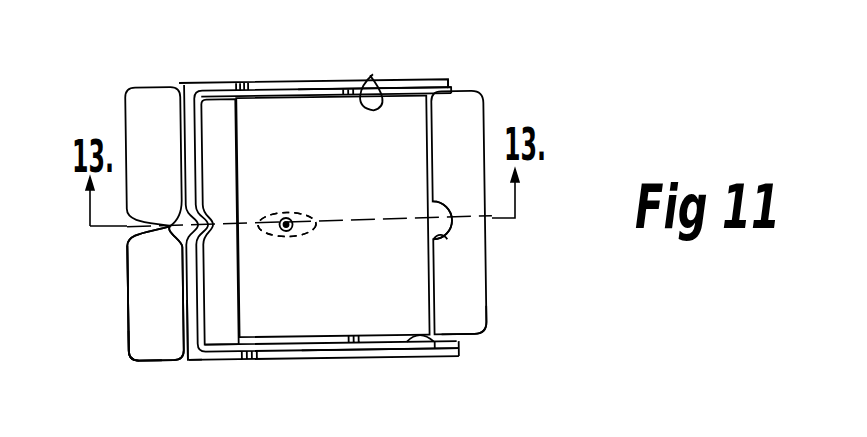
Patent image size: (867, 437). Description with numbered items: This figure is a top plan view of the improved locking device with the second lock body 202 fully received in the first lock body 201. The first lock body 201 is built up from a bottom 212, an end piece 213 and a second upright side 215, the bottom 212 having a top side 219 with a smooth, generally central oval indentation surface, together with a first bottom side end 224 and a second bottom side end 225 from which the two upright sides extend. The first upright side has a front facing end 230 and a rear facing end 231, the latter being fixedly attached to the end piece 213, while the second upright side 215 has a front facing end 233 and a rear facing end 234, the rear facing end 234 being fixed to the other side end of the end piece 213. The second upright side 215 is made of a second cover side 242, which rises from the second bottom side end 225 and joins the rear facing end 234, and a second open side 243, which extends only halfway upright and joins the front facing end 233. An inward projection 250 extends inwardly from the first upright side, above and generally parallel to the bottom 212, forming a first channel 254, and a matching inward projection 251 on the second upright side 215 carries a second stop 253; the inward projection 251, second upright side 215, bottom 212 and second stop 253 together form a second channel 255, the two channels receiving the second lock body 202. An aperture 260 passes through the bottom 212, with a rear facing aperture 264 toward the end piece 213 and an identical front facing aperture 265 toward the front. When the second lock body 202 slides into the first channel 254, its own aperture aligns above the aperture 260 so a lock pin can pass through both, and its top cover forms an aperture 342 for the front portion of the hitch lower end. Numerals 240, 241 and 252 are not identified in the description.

The first lock body 201 is at (130, 258).
The second lock body 202 is at (486, 290).
The bottom 212 is at (242, 325).
The end piece 213 is at (128, 286).
The second upright side 215 is at (257, 83).
The top side 219 is at (257, 393).
The first bottom side end 224 is at (460, 358).
The second bottom side end 225 is at (452, 80).
The front facing end 230 is at (460, 352).
The rear facing end 231 is at (132, 354).
The front facing end 233 is at (453, 88).
The rear facing end 234 is at (126, 90).
The lower frame member 240 is at (173, 365).
The lower plate layer 241 is at (358, 352).
The second cover side 242 is at (188, 44).
The second open side 243 is at (335, 81).
The inward projection 250 is at (464, 340).
The inward projection 251 is at (454, 95).
The inner left pad 252 is at (240, 340).
The second stop 253 is at (243, 85).
The first channel 254 is at (433, 352).
The second channel 255 is at (372, 78).
The aperture 260 is at (281, 237).
The rear facing aperture 264 is at (281, 190).
The front facing aperture 265 is at (308, 222).
The aperture 342 is at (447, 243).